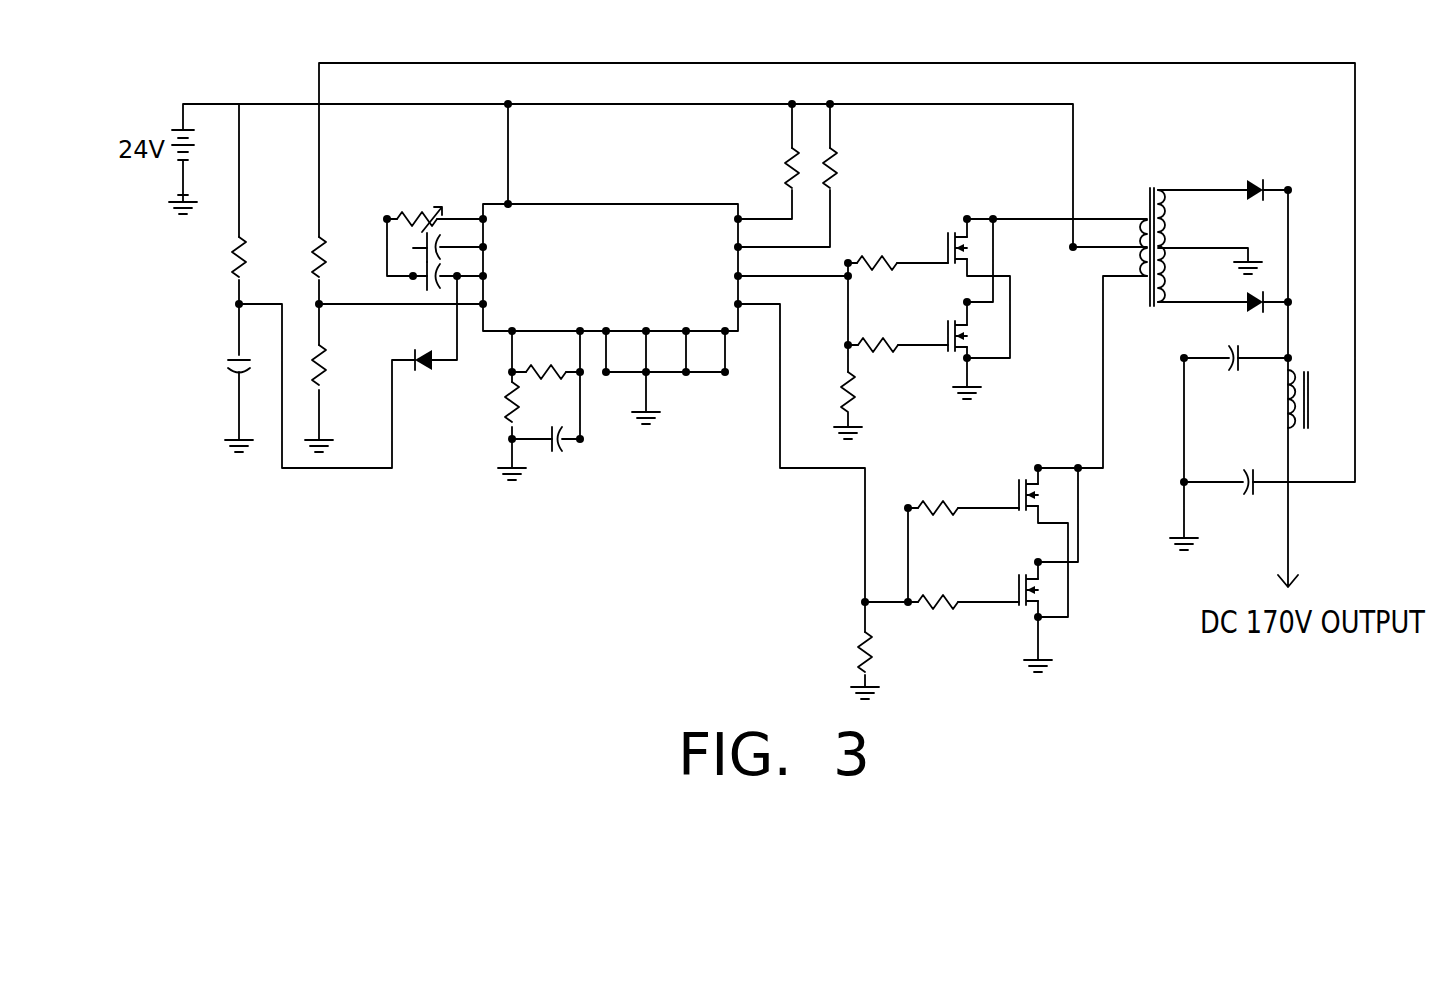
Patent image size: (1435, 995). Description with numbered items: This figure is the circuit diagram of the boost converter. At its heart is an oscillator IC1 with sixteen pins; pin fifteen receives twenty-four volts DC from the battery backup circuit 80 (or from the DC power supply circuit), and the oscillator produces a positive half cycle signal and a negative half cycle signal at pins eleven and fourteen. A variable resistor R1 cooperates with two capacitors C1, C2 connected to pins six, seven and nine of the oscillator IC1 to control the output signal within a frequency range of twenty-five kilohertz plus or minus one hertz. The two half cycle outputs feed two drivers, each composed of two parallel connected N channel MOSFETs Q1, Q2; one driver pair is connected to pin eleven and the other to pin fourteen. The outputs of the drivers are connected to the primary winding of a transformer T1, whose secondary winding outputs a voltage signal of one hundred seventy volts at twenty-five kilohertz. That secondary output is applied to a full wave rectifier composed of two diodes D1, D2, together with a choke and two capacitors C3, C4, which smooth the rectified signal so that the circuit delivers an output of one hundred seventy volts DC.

The battery backup circuit 80 is at (197, 163).
The variable resistor R1 is at (424, 207).
The capacitor C1 is at (448, 243).
The capacitor C2 is at (448, 271).
The oscillator IC1 is at (629, 276).
The N channel MOSFET Q1 is at (976, 367).
The N channel MOSFET Q2 is at (975, 458).
The transformer T1 is at (1161, 234).
The diode D1 is at (1257, 174).
The diode D2 is at (1260, 320).
The capacitor C3 is at (1242, 375).
The capacitor C4 is at (1254, 498).